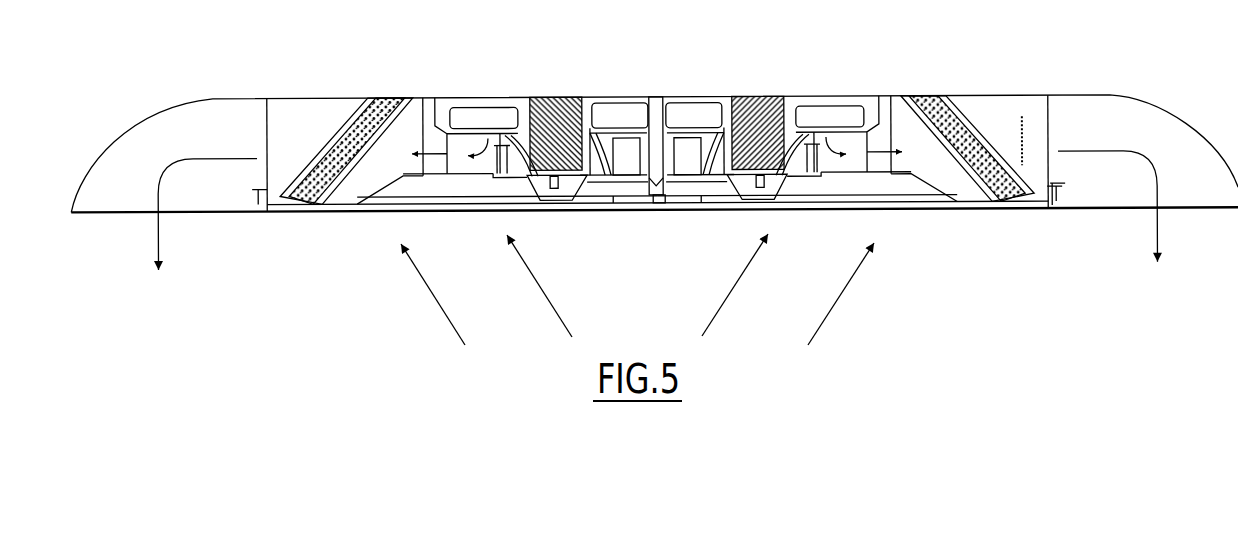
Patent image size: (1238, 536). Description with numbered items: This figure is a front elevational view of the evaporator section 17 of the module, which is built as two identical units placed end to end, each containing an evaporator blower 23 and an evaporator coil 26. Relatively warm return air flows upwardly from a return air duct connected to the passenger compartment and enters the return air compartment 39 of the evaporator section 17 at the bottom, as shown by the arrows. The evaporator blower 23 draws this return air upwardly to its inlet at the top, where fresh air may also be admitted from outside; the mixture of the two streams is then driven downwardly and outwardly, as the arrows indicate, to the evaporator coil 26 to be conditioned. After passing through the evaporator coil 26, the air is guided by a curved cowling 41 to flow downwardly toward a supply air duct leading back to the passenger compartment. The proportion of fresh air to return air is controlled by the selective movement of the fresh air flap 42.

The evaporator section 17 is at (790, 70).
The evaporator blower 23 is at (757, 100).
The evaporator coil 26 is at (978, 134).
The return air compartment 39 is at (886, 199).
The curved cowling 41 is at (490, 110).
The fresh air flap 42 is at (825, 115).